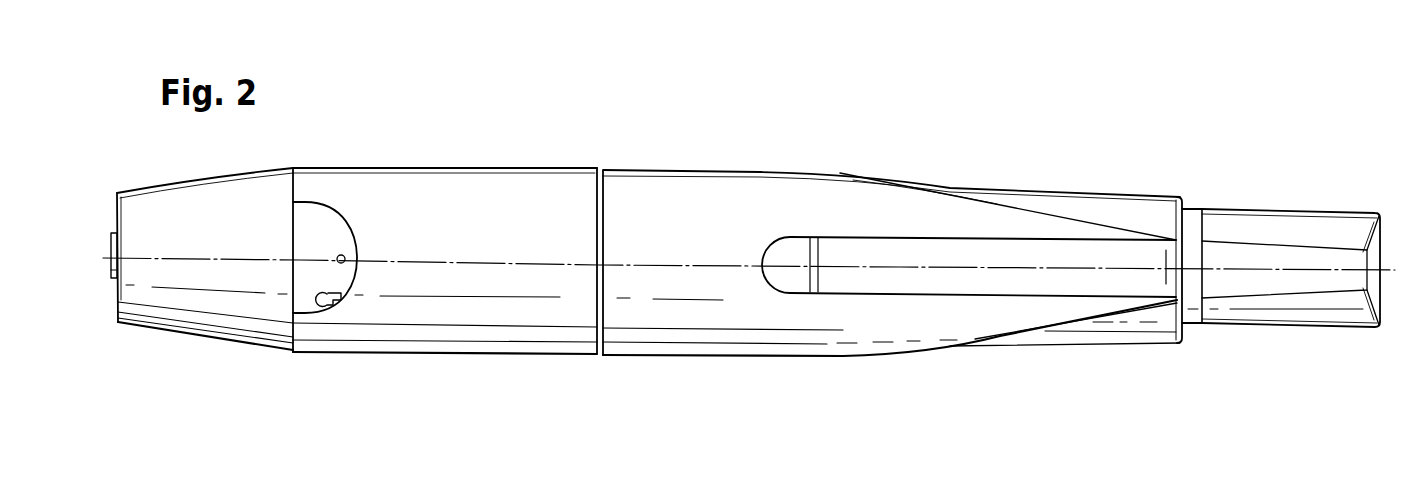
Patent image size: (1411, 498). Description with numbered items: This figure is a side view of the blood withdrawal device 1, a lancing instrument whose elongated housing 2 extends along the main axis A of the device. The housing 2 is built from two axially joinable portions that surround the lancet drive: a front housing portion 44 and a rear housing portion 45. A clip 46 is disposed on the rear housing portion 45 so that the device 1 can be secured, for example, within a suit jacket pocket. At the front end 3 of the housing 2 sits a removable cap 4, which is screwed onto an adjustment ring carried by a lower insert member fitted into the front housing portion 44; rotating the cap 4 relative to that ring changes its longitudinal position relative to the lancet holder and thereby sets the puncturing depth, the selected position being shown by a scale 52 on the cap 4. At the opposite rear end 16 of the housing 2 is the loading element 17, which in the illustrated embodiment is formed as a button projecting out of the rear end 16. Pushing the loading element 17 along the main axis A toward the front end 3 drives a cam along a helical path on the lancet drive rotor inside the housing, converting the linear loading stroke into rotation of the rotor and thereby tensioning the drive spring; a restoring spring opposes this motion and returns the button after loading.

The blood withdrawal device 1 is at (826, 170).
The housing 2 is at (700, 364).
The front end 3 is at (110, 315).
The removable cap 4 is at (199, 318).
The rear end 16 is at (1186, 346).
The loading element 17 is at (1299, 305).
The front housing portion 44 is at (485, 332).
The rear housing portion 45 is at (810, 343).
The clip 46 is at (863, 280).
The scale 52 is at (317, 227).
The main axis A is at (1094, 268).